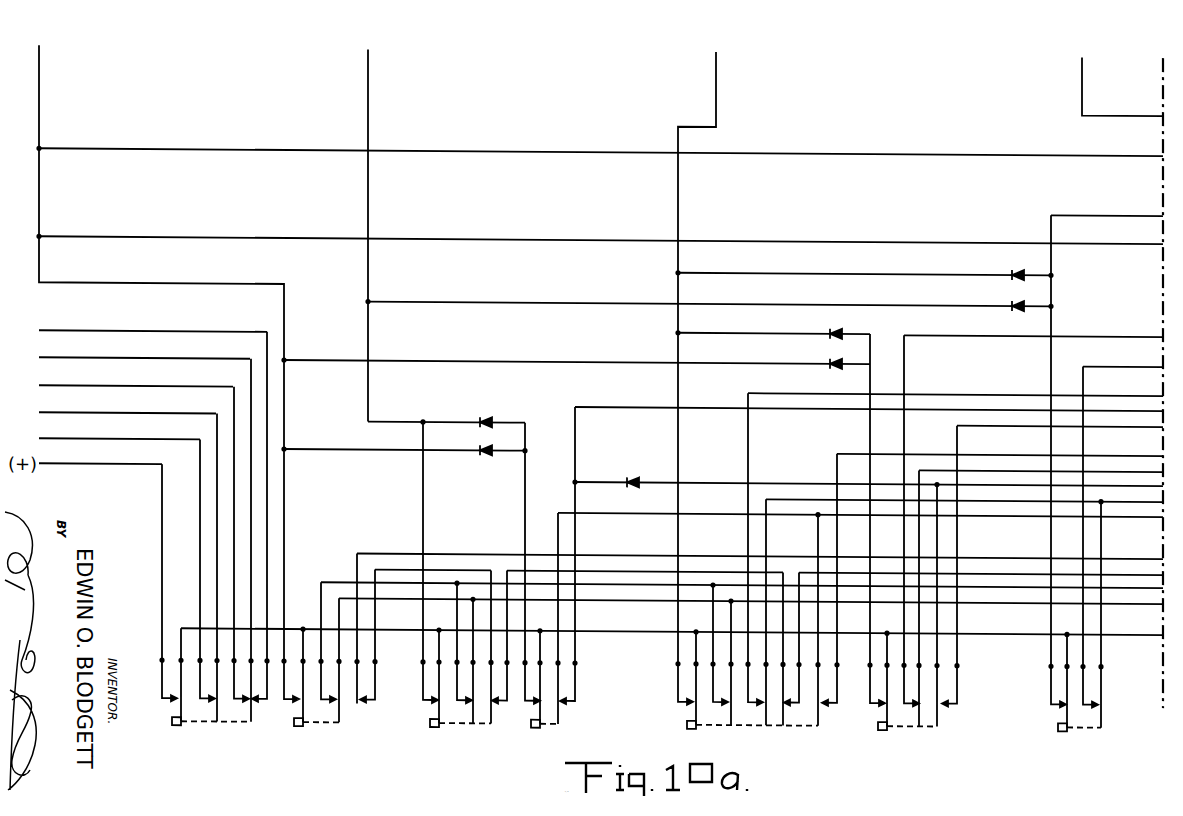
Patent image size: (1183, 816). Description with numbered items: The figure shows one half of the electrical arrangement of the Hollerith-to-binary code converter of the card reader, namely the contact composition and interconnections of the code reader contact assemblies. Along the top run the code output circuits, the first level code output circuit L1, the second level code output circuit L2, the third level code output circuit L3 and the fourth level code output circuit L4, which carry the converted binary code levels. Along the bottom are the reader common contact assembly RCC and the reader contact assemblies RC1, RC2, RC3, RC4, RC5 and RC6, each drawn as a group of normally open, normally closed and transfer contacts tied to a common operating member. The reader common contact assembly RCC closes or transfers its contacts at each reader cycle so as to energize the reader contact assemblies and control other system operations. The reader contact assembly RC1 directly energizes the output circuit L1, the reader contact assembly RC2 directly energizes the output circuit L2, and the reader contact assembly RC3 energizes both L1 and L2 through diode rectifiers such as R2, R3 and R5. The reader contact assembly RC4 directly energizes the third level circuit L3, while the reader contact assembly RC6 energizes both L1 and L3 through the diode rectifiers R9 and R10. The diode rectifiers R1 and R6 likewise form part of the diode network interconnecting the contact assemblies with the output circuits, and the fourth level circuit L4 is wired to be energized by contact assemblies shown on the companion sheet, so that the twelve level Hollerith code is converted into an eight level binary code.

The first level code output circuit L1 is at (157, 330).
The second level code output circuit L2 is at (367, 211).
The third level code output circuit L3 is at (703, 332).
The fourth level code output circuit L4 is at (1115, 59).
The diode rectifier R1 is at (634, 492).
The diode rectifier R2 is at (486, 412).
The diode rectifier R3 is at (836, 326).
The diode rectifier R5 is at (485, 463).
The diode rectifier R6 is at (836, 375).
The diode rectifier R9 is at (1017, 315).
The diode rectifier R10 is at (1021, 266).
The reader common contact assembly RCC is at (230, 707).
The reader contact assembly RC1 is at (334, 708).
The reader contact assembly RC2 is at (465, 709).
The reader contact assembly RC3 is at (550, 709).
The reader contact assembly RC4 is at (757, 711).
The reader contact assembly RC5 is at (913, 712).
The reader contact assembly RC6 is at (1076, 712).